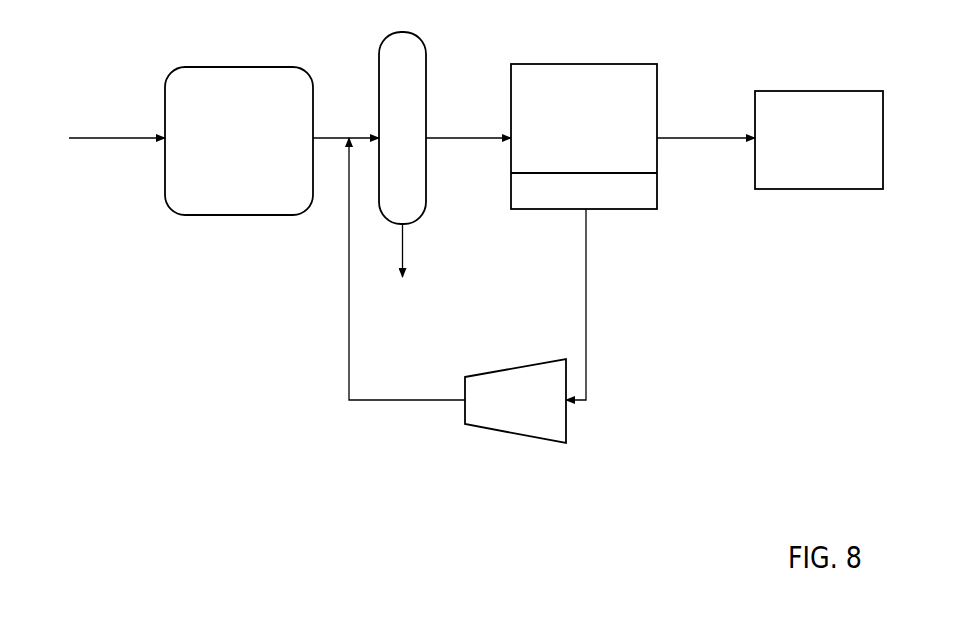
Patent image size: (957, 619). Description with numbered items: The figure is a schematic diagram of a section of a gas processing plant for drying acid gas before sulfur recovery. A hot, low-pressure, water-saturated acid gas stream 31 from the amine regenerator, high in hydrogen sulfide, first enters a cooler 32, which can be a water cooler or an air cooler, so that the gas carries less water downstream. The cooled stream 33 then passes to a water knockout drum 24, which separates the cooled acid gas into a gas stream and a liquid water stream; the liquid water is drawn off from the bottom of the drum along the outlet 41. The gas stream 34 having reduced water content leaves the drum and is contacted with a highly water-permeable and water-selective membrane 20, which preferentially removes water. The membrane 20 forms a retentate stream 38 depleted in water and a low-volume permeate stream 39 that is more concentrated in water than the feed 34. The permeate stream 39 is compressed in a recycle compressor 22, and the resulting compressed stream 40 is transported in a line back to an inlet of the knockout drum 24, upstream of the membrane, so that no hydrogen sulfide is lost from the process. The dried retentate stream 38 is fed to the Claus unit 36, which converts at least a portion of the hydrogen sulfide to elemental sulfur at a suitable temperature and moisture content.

The water-selective membrane 20 is at (572, 127).
The recycle compressor 22 is at (505, 409).
The knockout drum 24 is at (392, 137).
The acid gas stream 31 is at (98, 138).
The cooler 32 is at (229, 147).
The cooled stream 33 is at (345, 133).
The gas stream 34 is at (462, 135).
The Claus unit 36 is at (809, 149).
The retentate stream 38 is at (700, 135).
The permeate stream 39 is at (587, 307).
The compressed stream 40 is at (435, 400).
The liquid drain stream 41 is at (404, 261).